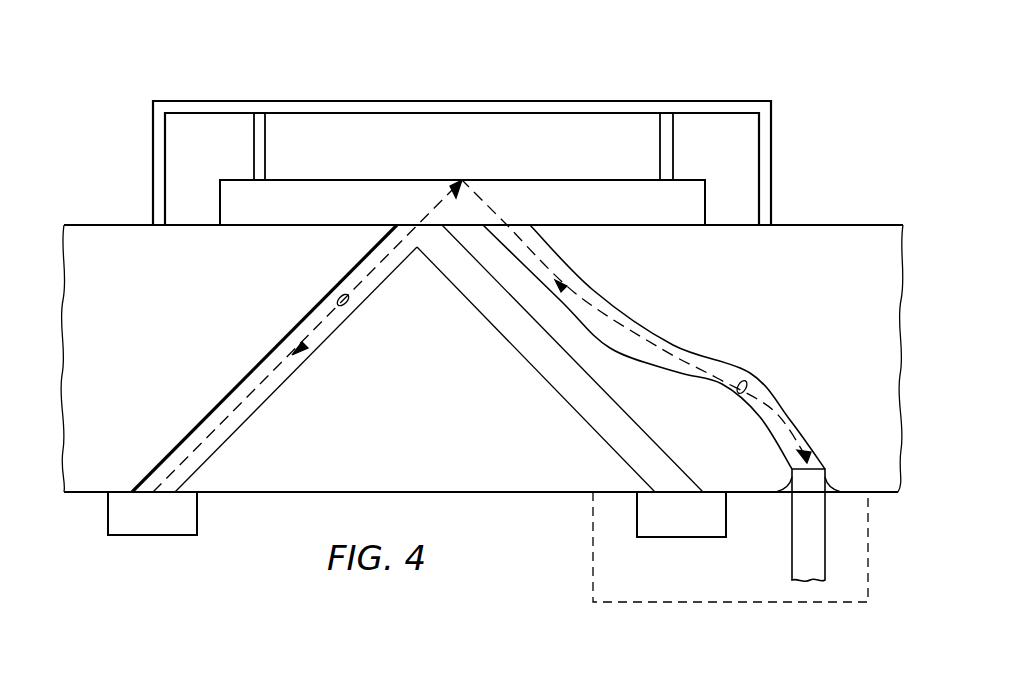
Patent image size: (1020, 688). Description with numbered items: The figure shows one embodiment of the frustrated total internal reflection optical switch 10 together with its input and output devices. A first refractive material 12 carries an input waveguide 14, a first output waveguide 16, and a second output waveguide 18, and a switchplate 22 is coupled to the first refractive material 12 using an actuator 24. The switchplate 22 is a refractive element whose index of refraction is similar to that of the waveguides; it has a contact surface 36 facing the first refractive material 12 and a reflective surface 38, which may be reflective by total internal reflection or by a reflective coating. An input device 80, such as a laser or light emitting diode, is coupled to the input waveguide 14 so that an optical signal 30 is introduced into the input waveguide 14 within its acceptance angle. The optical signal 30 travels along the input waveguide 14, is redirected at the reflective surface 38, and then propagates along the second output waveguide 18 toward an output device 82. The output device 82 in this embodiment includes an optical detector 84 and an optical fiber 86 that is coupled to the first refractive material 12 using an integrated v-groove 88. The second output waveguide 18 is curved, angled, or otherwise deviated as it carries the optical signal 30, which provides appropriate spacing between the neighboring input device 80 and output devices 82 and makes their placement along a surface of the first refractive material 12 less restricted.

The optical switch 10 is at (193, 80).
The first refractive material 12 is at (134, 293).
The input waveguide 14 is at (295, 370).
The first output waveguide 16 is at (530, 362).
The second output waveguide 18 is at (596, 290).
The switchplate 22 is at (338, 215).
The actuator 24 is at (773, 170).
The optical signal 30 is at (343, 298).
The contact surface 36 is at (252, 227).
The reflective surface 38 is at (527, 178).
The input device 80 is at (150, 538).
The output device 82 is at (800, 605).
The optical detector 84 is at (680, 540).
The optical fiber 86 is at (792, 558).
The integrated v-groove 88 is at (830, 477).